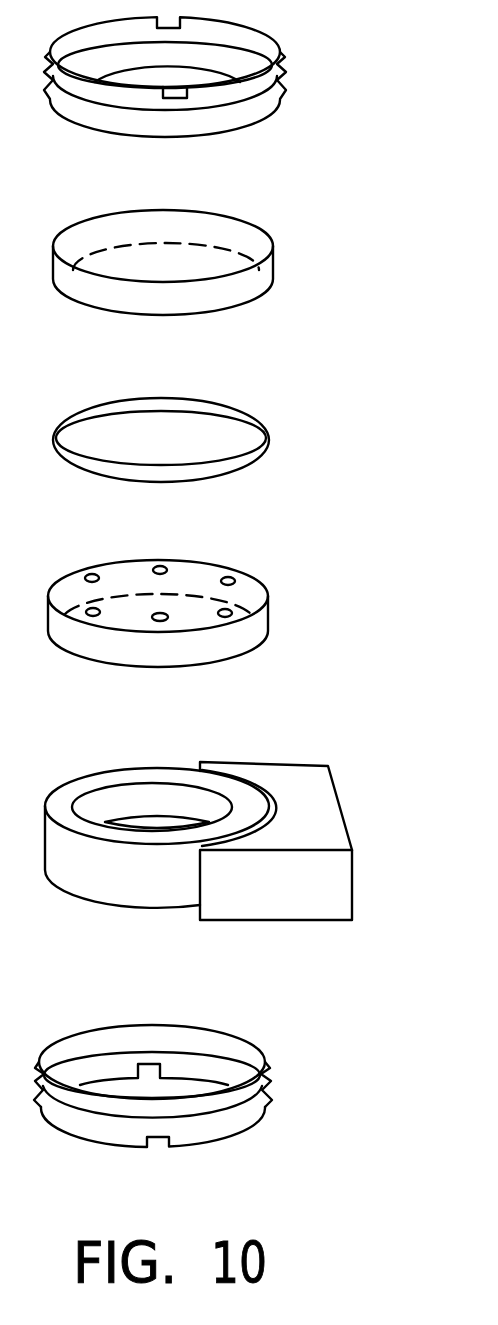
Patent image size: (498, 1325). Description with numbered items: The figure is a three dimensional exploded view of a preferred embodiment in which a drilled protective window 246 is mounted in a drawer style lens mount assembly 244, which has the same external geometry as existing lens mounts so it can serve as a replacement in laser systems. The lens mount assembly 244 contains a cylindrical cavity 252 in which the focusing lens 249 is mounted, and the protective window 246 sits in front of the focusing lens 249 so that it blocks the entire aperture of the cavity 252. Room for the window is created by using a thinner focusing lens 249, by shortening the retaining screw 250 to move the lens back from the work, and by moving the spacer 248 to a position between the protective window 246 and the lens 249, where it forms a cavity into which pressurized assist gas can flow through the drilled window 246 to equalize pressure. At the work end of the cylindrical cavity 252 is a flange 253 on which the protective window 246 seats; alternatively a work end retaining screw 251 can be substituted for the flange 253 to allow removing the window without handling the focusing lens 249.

The retaining screw 250 is at (278, 88).
The focusing lens 249 is at (270, 270).
The spacer 248 is at (270, 438).
The drilled protective window 246 is at (268, 620).
The drawer style lens mount assembly 244 is at (224, 803).
The cylindrical cavity 252 is at (155, 823).
The flange 253 is at (205, 807).
The work end retaining screw 251 is at (265, 1098).